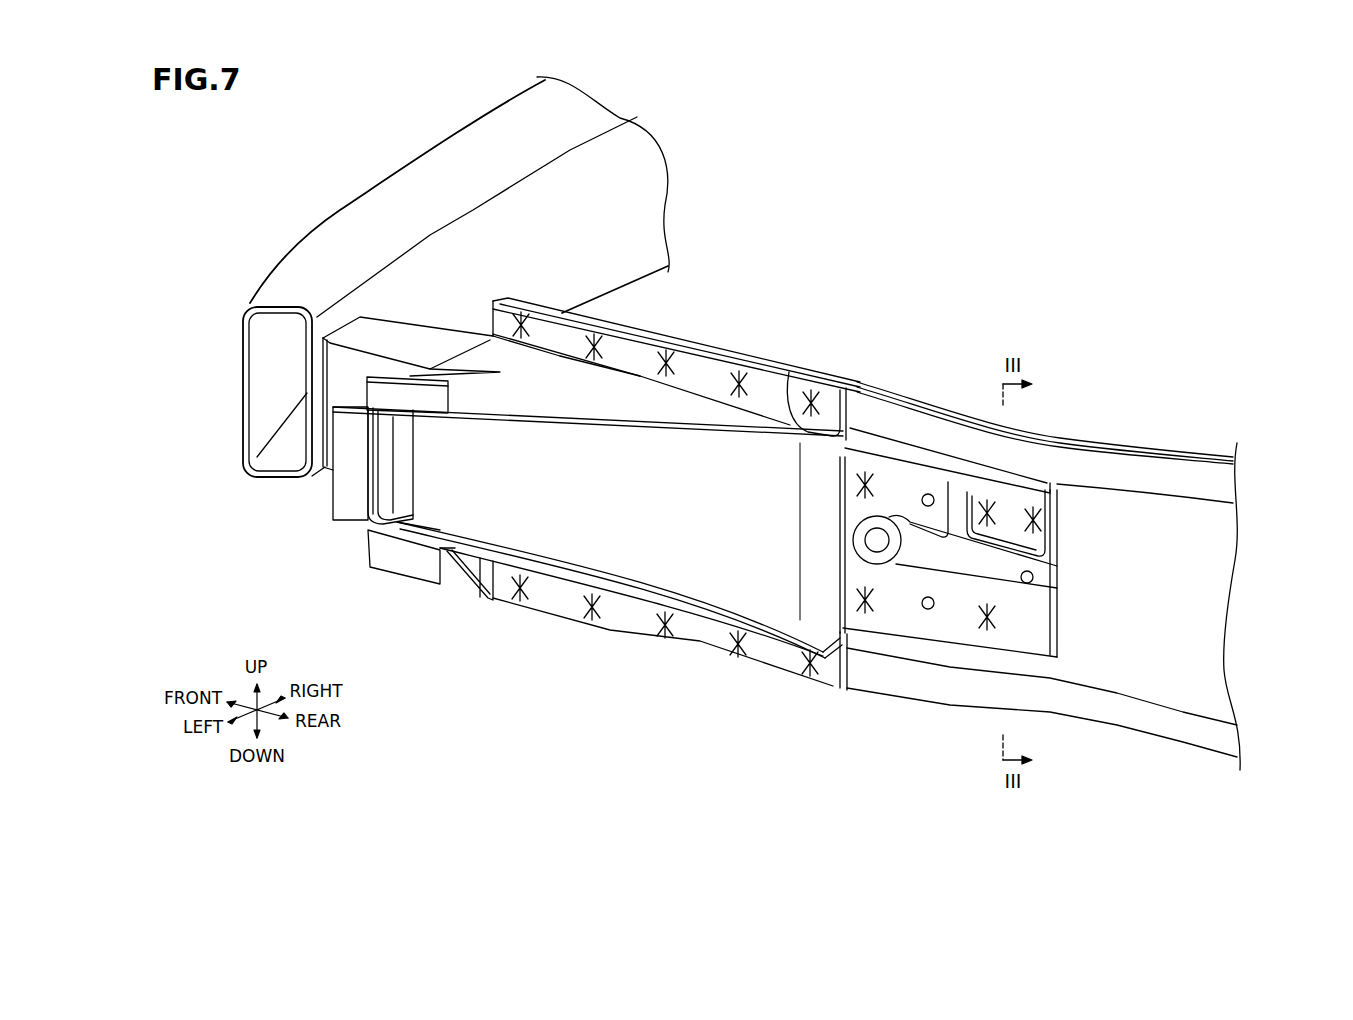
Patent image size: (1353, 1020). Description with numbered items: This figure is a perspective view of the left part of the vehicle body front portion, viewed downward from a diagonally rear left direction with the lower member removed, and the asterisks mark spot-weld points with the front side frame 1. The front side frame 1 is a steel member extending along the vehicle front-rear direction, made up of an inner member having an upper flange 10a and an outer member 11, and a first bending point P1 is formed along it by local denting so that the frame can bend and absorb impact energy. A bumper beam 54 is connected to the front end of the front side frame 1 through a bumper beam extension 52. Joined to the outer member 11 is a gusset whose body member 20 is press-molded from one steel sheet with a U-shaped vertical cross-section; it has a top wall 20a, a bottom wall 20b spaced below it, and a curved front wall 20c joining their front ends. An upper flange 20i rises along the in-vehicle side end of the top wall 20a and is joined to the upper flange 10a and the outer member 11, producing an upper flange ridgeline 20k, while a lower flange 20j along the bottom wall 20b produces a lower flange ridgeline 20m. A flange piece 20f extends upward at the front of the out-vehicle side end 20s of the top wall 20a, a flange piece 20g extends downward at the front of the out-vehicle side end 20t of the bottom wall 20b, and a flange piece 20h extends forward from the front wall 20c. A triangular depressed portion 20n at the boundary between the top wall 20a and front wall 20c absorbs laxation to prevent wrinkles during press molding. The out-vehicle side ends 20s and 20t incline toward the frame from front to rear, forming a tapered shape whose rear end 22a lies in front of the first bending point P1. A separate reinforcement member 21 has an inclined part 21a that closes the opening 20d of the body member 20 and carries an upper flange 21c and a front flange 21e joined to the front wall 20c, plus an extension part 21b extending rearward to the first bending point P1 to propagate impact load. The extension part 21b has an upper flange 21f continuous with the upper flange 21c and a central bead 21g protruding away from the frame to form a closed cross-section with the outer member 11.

The front side frame 1 is at (921, 399).
The upper flange 10a is at (887, 390).
The outer member 11 is at (1207, 658).
The body member 20 is at (490, 360).
The top wall 20a is at (547, 378).
The bottom wall 20b is at (477, 590).
The front wall 20c is at (355, 532).
The opening 20d is at (576, 424).
The flange piece 20f is at (423, 396).
The flange piece 20g is at (417, 567).
The flange piece 20h is at (352, 486).
The upper flange 20i is at (635, 360).
The lower flange 20j is at (558, 600).
The upper flange ridgeline 20k is at (697, 390).
The lower flange ridgeline 20m is at (830, 662).
The depressed portion 20n is at (470, 378).
The out-vehicle side end 20s is at (637, 428).
The out-vehicle side end 20t is at (613, 603).
The reinforcement member 21 is at (674, 536).
The inclined part 21a is at (720, 567).
The extension part 21b is at (930, 632).
The upper flange 21c is at (808, 447).
The front flange 21e is at (393, 532).
The upper flange 21f is at (1033, 485).
The bead 21g is at (1000, 573).
The rear end of the tapered part 22a is at (803, 375).
The bumper beam extension 52 is at (408, 342).
The bumper beam 54 is at (398, 195).
The first bending point P1 is at (1080, 720).